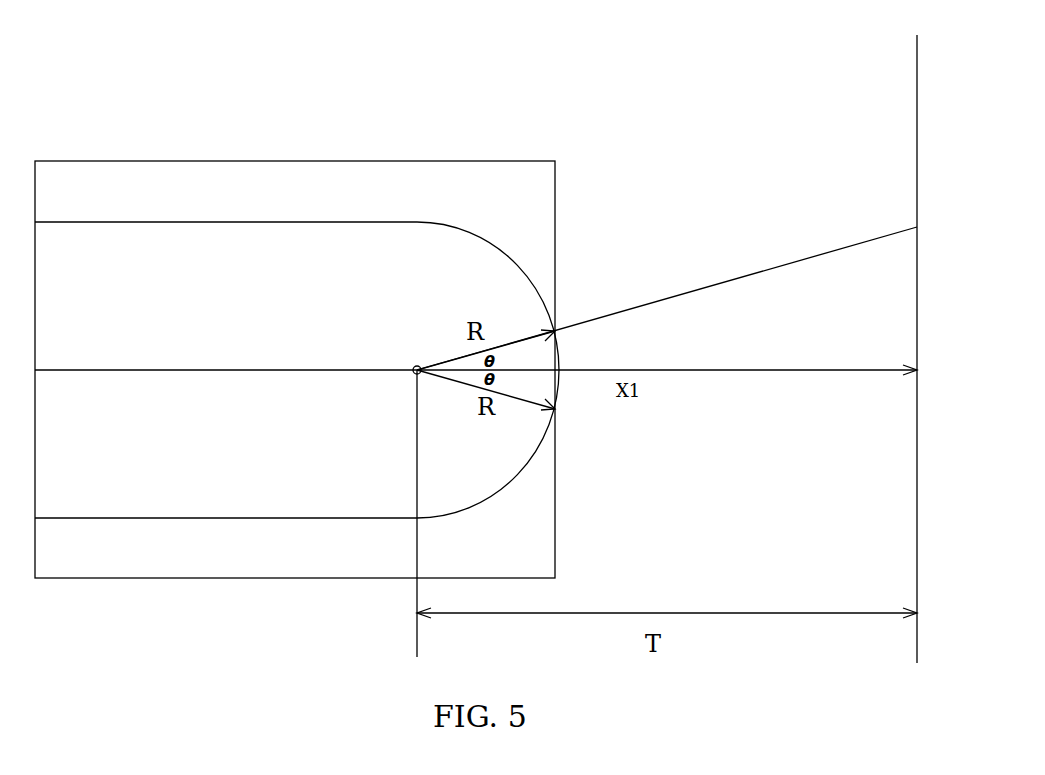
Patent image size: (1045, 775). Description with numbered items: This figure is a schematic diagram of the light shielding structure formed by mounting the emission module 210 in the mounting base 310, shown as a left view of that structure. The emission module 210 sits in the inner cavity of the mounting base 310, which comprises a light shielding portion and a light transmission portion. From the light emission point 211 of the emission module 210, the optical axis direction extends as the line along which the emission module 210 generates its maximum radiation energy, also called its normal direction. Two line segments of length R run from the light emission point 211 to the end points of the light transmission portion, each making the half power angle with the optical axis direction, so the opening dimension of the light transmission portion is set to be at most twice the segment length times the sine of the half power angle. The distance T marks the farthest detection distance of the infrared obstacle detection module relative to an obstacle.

The emission module 210 is at (215, 253).
The light emission point 211 is at (414, 367).
The mounting base 310 is at (402, 188).